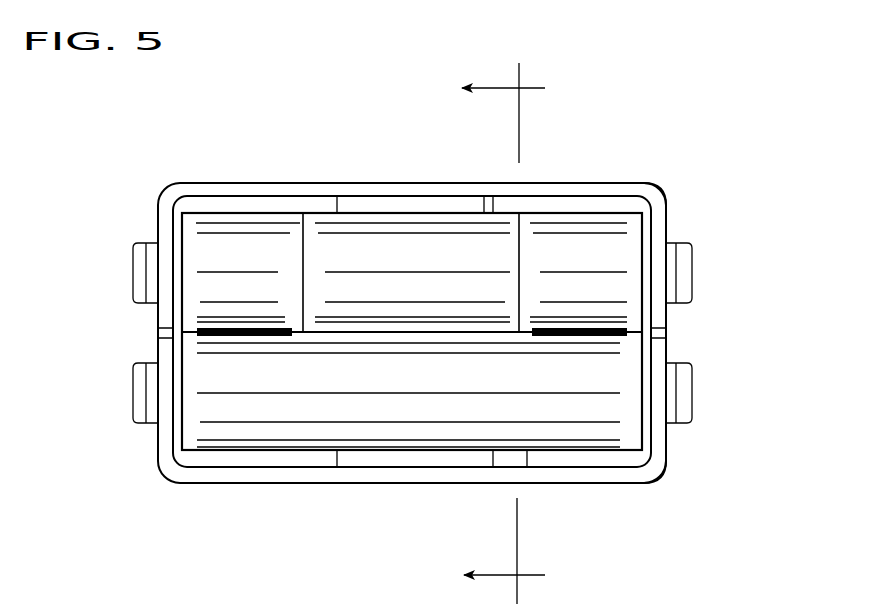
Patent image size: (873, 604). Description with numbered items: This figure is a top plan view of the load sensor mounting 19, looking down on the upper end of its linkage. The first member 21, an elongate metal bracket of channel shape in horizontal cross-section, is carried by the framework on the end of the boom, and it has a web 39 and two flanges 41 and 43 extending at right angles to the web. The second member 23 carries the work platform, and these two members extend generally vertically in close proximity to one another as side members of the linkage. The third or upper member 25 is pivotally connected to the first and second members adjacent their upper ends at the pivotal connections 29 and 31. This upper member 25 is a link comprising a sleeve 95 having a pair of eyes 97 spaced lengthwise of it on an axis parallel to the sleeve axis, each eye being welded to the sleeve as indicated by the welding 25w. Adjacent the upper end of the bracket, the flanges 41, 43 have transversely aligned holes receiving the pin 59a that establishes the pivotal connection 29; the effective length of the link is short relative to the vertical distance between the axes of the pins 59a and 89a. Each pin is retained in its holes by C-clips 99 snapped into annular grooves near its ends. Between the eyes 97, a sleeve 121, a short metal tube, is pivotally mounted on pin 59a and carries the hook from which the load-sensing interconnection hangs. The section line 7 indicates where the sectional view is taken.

The section line 7- 7 is at (503, 329).
The load sensor mounting 19 is at (176, 487).
The first member 21 is at (656, 181).
The second member 23 is at (659, 476).
The third member 25 is at (434, 419).
The welding 25w is at (232, 337).
The pivotal connection 29 is at (131, 271).
The pivotal connection 31 is at (130, 391).
The web 39 is at (339, 183).
The flange 41 is at (667, 223).
The flange 43 is at (159, 207).
The pin 59a is at (692, 275).
The pin 89a is at (692, 398).
The sleeve 95 is at (330, 410).
The eyes 97 is at (228, 248).
The C-clips 99 is at (677, 363).
The sleeve 121 is at (403, 257).